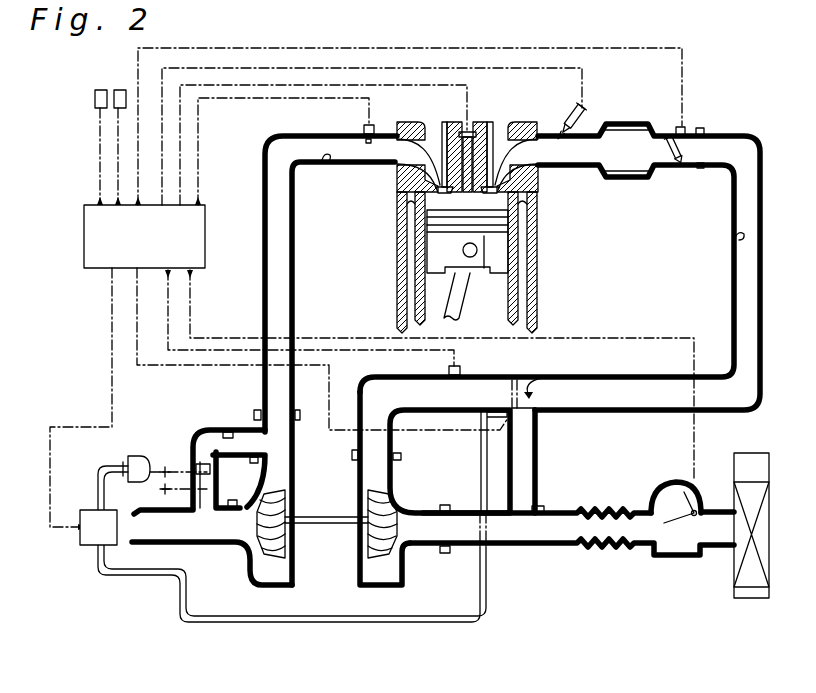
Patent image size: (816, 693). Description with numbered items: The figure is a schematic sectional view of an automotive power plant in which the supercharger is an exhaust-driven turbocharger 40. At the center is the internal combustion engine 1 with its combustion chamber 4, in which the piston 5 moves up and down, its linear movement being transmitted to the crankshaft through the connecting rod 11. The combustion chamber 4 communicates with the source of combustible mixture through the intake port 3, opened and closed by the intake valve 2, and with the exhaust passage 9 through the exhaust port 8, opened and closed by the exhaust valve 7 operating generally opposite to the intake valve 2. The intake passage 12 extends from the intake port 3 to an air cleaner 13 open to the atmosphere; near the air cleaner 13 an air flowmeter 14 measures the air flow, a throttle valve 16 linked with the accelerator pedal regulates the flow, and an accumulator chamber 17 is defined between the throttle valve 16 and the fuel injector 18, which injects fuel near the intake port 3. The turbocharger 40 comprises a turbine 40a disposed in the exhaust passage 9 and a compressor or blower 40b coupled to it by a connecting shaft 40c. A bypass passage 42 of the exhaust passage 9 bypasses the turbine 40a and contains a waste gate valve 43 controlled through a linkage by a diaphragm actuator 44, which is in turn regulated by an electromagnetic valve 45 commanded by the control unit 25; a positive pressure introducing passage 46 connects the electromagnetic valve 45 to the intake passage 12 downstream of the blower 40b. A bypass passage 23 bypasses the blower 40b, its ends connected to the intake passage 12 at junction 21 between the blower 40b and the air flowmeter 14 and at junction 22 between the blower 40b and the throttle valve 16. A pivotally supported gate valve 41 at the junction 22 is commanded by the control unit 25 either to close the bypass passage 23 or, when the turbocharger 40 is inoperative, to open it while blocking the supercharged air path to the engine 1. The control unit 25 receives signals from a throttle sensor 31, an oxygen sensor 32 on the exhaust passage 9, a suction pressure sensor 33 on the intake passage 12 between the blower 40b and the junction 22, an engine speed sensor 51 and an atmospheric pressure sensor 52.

The internal combustion engine 1 is at (552, 280).
The intake valve 2 is at (509, 215).
The intake port 3 is at (497, 190).
The combustion chamber 4 is at (467, 189).
The piston 5 is at (478, 250).
The exhaust valve 7 is at (419, 207).
The exhaust port 8 is at (400, 172).
The exhaust passage 9 is at (326, 162).
The connecting rod 11 is at (462, 289).
The intake passage 12 is at (738, 238).
The air cleaner 13 is at (747, 573).
The air flowmeter 14 is at (700, 480).
The throttle valve 16 is at (475, 140).
The accumulator chamber 17 is at (629, 124).
The fuel injector 18 is at (584, 108).
The junction 21 is at (520, 521).
The junction 22 is at (546, 383).
The bypass passage 23 is at (545, 470).
The control unit 25 is at (206, 231).
The throttle sensor 31 is at (687, 127).
The oxygen sensor 32 is at (365, 125).
The suction pressure sensor 33 is at (462, 372).
The turbocharger 40 is at (311, 534).
The turbine 40a is at (297, 558).
The compressor or blower 40b is at (358, 558).
The connecting shaft 40c is at (326, 523).
The gate valve 41 is at (541, 414).
The bypass passage 42 is at (231, 431).
The waste gate valve 43 is at (203, 462).
The actuator 44 is at (136, 455).
The electromagnetic valve 45 is at (88, 535).
The positive pressure introducing passage 46 is at (230, 625).
The engine speed sensor 51 is at (118, 90).
The atmospheric pressure sensor 52 is at (95, 98).